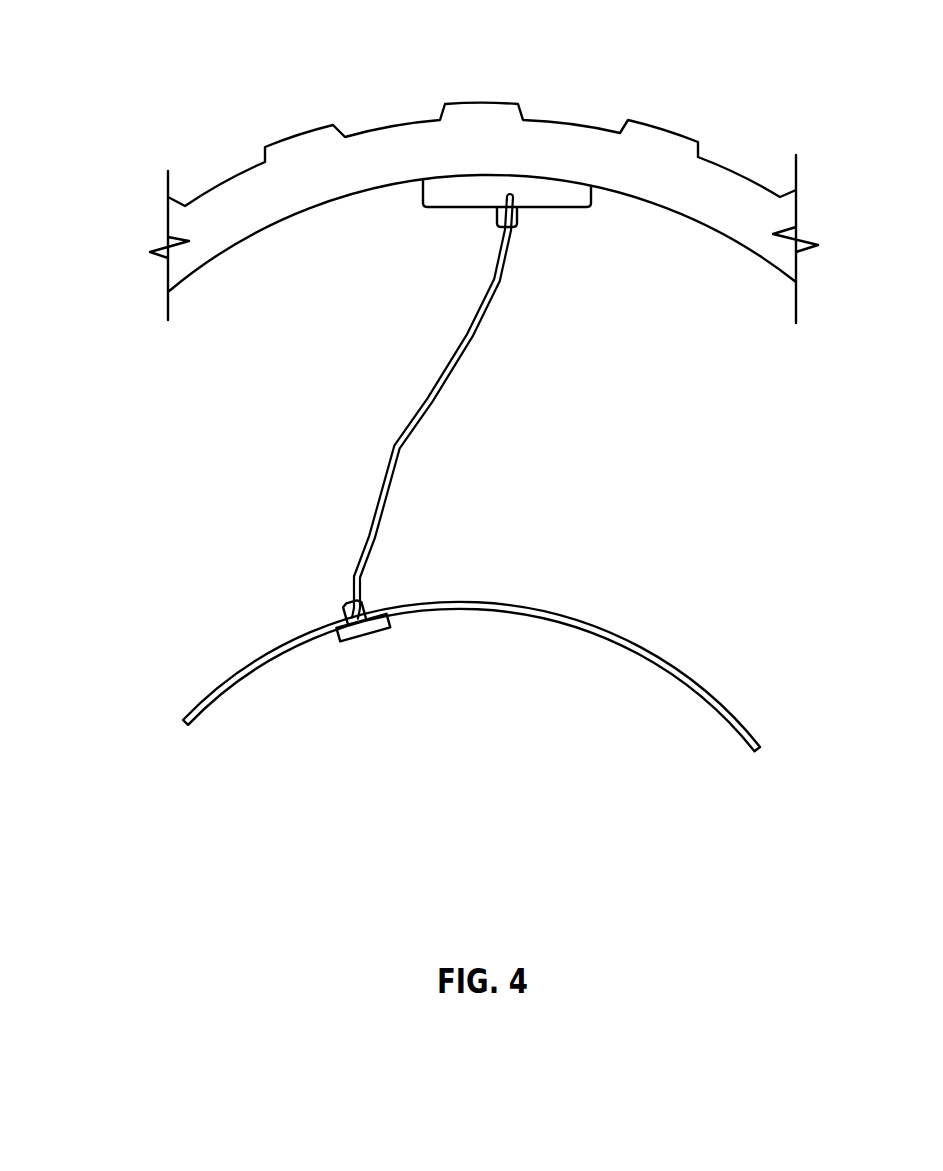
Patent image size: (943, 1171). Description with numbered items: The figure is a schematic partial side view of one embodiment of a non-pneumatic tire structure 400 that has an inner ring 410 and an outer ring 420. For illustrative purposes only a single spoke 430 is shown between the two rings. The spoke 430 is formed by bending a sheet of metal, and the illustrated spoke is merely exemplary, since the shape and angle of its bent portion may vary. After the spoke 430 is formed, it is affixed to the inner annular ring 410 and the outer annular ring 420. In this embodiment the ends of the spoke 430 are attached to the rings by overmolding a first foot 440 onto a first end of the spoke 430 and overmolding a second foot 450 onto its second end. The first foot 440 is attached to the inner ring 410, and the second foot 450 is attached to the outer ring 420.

The non-pneumatic tire structure 400 is at (118, 40).
The inner ring 410 is at (668, 659).
The outer ring 420 is at (734, 241).
The spoke 430 is at (422, 402).
The first foot 440 is at (335, 632).
The second foot 450 is at (431, 208).